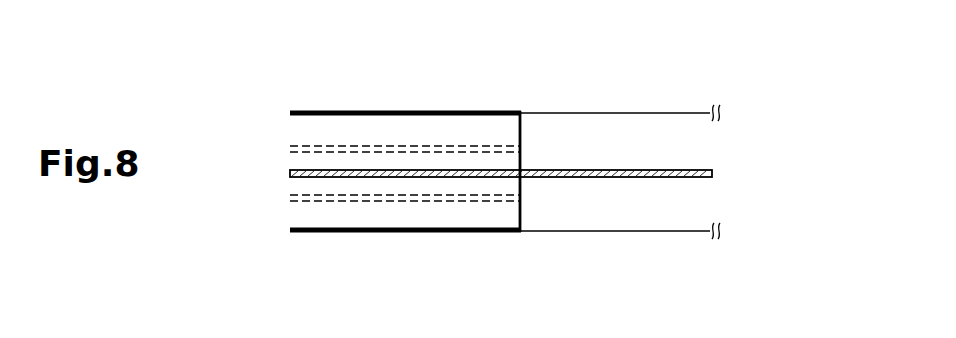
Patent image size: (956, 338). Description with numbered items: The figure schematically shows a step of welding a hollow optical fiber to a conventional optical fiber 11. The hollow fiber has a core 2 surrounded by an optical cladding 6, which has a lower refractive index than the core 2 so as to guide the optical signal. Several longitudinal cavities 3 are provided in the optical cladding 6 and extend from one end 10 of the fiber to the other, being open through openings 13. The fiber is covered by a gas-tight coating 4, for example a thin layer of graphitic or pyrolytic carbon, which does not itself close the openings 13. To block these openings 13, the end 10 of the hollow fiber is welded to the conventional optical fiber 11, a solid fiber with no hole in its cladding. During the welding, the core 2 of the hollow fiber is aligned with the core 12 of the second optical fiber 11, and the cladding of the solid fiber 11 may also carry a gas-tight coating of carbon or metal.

The core 2 is at (290, 173).
The longitudinal cavities 3 is at (290, 147).
The gas-tight coating 4 is at (290, 113).
The optical cladding 6 is at (295, 162).
The end of the fiber 10 is at (520, 185).
The conventional optical fiber 11 is at (664, 211).
The core of the second optical fiber 12 is at (712, 172).
The openings 13 is at (520, 147).